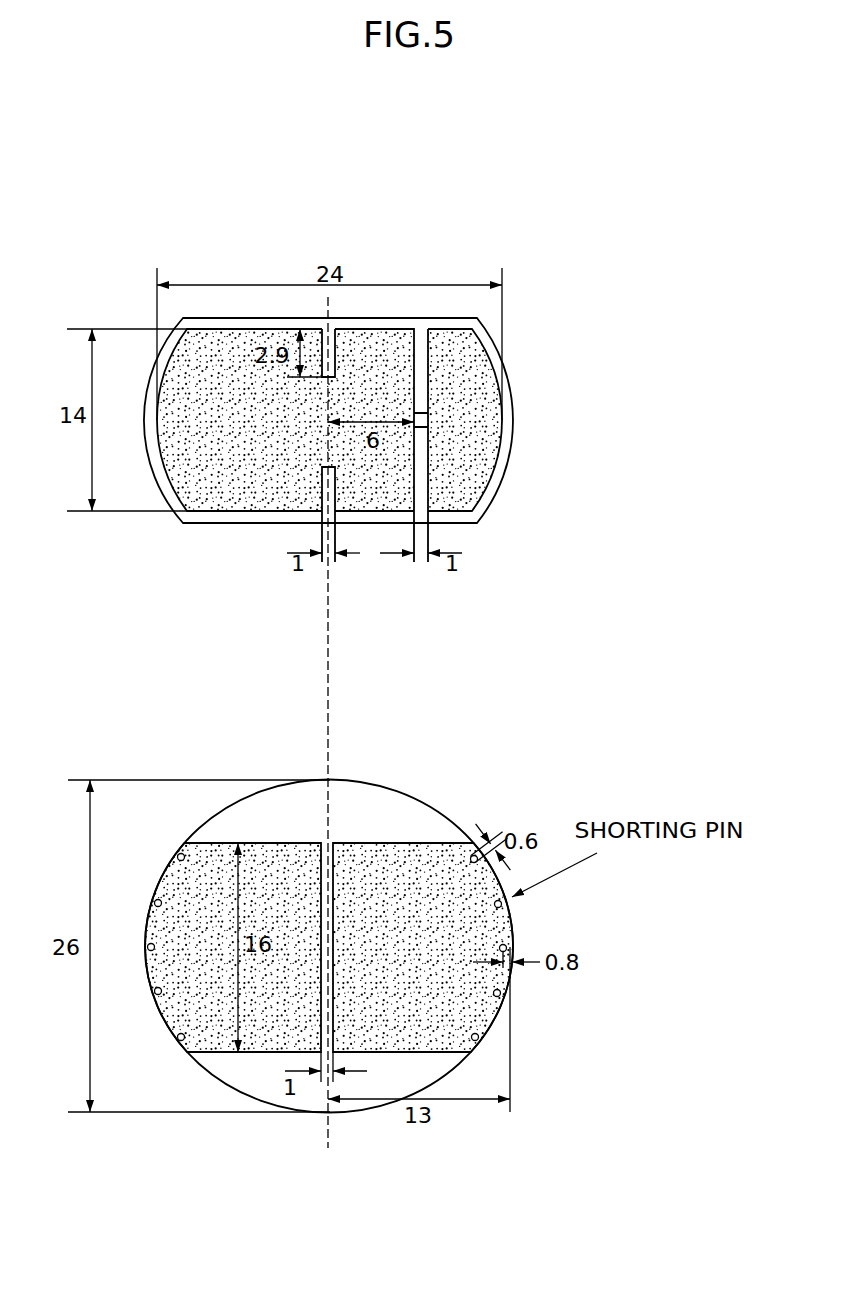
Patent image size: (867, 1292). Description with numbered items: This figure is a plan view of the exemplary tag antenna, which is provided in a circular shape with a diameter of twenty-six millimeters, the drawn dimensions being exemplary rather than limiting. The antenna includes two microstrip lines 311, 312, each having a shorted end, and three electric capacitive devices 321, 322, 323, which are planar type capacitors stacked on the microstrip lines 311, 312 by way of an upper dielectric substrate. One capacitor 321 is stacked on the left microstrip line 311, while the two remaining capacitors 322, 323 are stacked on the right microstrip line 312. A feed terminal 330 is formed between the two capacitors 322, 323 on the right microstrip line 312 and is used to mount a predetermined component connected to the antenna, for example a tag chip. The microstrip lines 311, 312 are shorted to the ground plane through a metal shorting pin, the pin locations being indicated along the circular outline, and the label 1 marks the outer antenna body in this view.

The antenna 1 is at (458, 455).
The electric capacitive device 321 is at (243, 430).
The electric capacitive device 322 is at (380, 388).
The electric capacitive device 323 is at (455, 360).
The feed terminal 330 is at (440, 417).
The microstrip line 311 is at (290, 862).
The microstrip line 312 is at (361, 889).